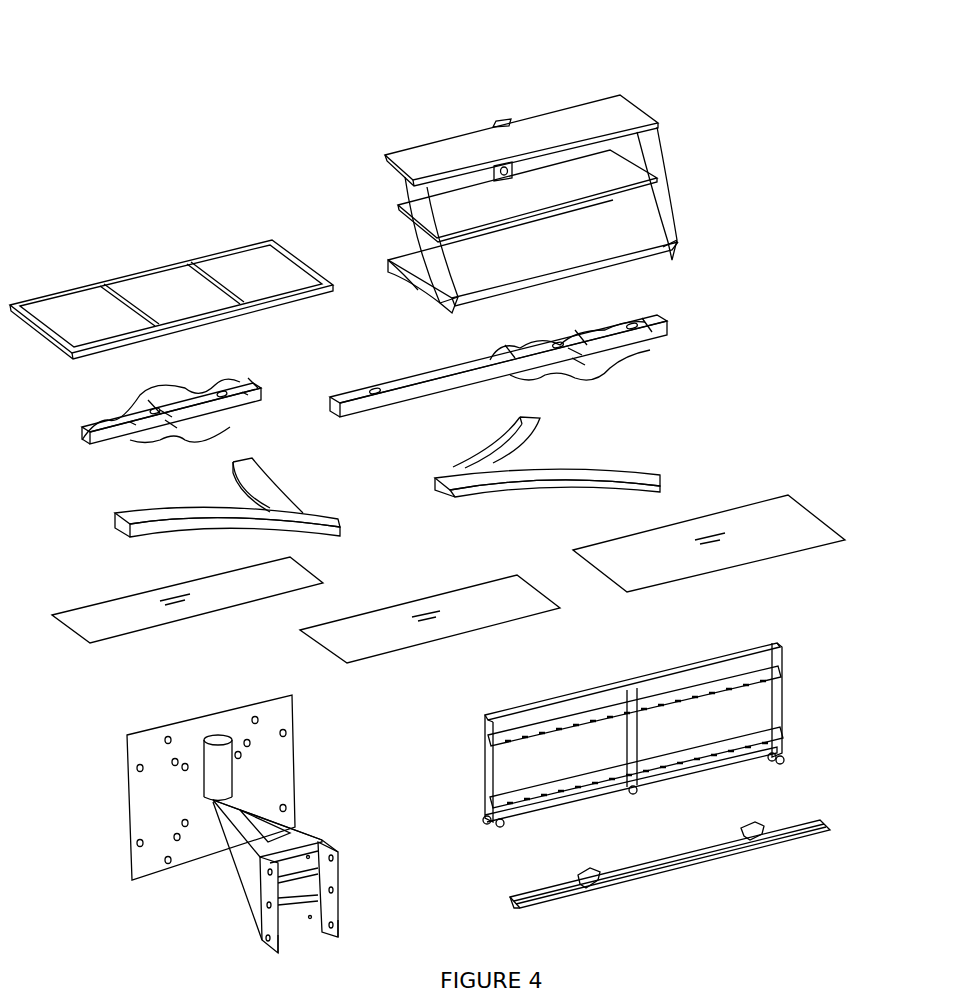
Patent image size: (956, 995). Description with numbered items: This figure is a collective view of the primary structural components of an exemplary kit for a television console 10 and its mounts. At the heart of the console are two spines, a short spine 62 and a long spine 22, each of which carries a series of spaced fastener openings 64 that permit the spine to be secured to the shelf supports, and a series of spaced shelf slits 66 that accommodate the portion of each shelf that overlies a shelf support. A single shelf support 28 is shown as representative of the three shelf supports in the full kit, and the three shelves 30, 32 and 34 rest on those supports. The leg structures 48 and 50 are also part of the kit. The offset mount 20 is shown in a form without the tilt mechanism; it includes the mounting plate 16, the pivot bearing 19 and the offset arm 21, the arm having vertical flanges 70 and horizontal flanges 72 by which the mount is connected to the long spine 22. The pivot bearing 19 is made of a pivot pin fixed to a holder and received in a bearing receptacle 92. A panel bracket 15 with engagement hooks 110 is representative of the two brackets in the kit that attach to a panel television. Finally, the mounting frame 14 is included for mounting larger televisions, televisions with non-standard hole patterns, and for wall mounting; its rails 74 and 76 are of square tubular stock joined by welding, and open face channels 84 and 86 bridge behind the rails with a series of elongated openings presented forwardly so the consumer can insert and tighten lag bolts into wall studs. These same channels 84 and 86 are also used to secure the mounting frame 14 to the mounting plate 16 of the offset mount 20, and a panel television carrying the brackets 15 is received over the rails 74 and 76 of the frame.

The television stand 10 is at (648, 112).
The mounting frame 14 is at (783, 662).
The panel bracket 15 is at (713, 858).
The mounting plate 16 is at (290, 762).
The pivot bearing 19 is at (195, 787).
The offset mount 20 is at (243, 871).
The offset arm 21 is at (292, 815).
The long spine 22 is at (402, 378).
The shelf support 28 is at (155, 268).
The shelf 30 is at (163, 625).
The shelf 32 is at (440, 643).
The shelf 34 is at (698, 578).
The leg structure 48 is at (578, 468).
The leg structure 50 is at (288, 485).
The short spine 62 is at (245, 372).
The fastener openings 64 is at (168, 428).
The shelf slits 66 is at (160, 408).
The vertical flanges 70 is at (340, 930).
The horizontal flanges 72 is at (320, 845).
The rail 74 is at (560, 690).
The rail 76 is at (560, 810).
The open face channel 84 is at (660, 685).
The open face channel 86 is at (665, 750).
The bearing receptacle 92 is at (210, 821).
The engagement hooks 110 is at (578, 870).